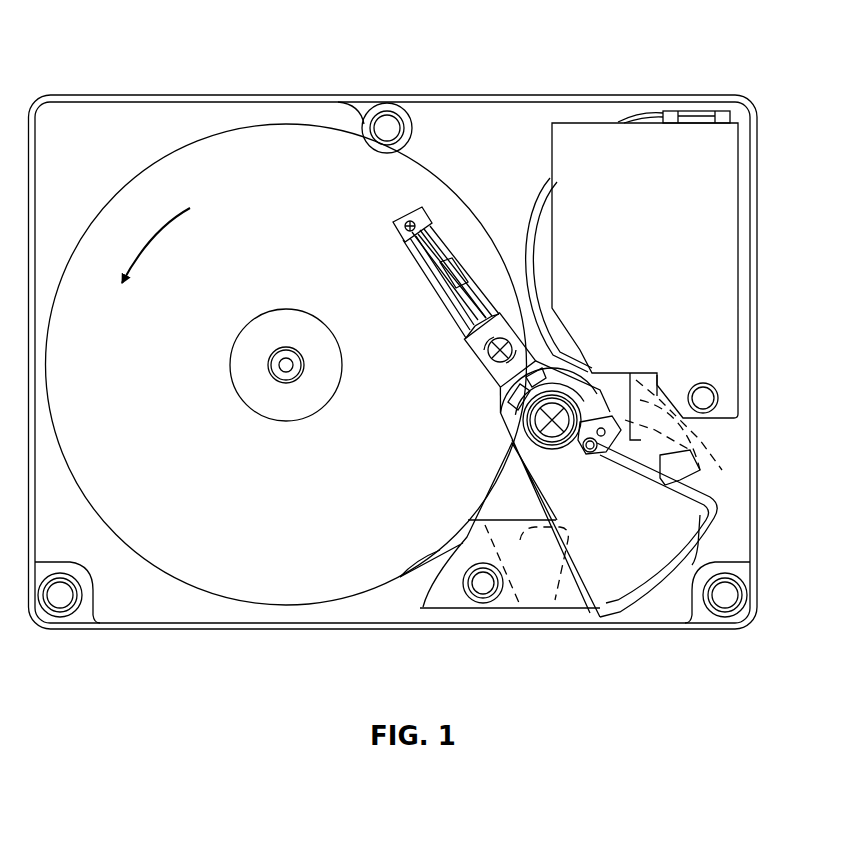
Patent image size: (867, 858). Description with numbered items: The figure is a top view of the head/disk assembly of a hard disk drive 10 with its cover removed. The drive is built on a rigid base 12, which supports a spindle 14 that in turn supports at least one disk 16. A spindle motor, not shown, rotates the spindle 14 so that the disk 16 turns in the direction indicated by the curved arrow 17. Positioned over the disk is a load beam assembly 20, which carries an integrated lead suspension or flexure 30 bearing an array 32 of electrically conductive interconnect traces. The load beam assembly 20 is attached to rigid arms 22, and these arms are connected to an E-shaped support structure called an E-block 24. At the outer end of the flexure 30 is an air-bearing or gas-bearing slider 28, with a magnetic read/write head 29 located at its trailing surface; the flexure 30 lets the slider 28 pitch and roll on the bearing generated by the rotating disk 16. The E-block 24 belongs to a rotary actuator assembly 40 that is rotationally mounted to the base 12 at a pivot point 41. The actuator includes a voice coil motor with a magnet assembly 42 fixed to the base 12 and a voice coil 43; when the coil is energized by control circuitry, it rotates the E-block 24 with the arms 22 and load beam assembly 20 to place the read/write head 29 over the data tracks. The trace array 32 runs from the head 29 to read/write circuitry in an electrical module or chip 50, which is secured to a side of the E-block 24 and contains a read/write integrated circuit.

The hard disk drive 10 is at (103, 36).
The rigid base 12 is at (174, 631).
The spindle 14 is at (243, 330).
The disk 16 is at (272, 590).
The curved arrow 17 is at (163, 232).
The load beam assembly 20 is at (437, 258).
The rigid arms 22 is at (475, 360).
The E-block 24 is at (502, 408).
The slider 28 is at (420, 210).
The read/write head 29 is at (406, 220).
The flexure 30 is at (433, 230).
The array of interconnect traces 32 is at (455, 257).
The rotary actuator assembly 40 is at (506, 479).
The pivot point 41 is at (533, 428).
The magnet assembly 42 is at (650, 412).
The voice coil 43 is at (692, 505).
The electrical module or chip 50 is at (593, 373).